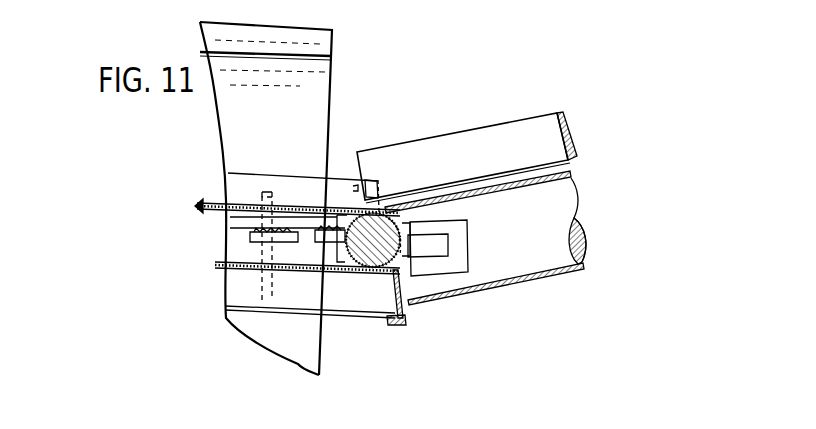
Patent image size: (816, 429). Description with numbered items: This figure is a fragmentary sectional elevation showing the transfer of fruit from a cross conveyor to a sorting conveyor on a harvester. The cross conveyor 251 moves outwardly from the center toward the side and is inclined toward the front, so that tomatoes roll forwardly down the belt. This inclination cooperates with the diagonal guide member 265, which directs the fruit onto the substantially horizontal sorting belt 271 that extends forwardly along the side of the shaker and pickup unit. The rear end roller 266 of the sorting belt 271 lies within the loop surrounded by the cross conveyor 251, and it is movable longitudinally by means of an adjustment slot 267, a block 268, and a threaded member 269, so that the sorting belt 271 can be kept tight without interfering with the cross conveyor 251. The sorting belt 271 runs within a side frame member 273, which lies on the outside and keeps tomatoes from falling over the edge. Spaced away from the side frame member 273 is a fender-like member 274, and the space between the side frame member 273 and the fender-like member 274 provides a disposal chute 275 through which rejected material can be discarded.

The fender-like member 274 is at (333, 90).
The sorting belt 271 is at (302, 208).
The disposal chute 275 is at (262, 242).
The side frame member 273 is at (308, 296).
The threaded member 269 is at (327, 269).
The block 268 is at (433, 242).
The adjustment slot 267 is at (466, 227).
The diagonal guide member 265 is at (527, 121).
The cross conveyor 251 is at (488, 188).
The rear end roller 266 is at (376, 273).